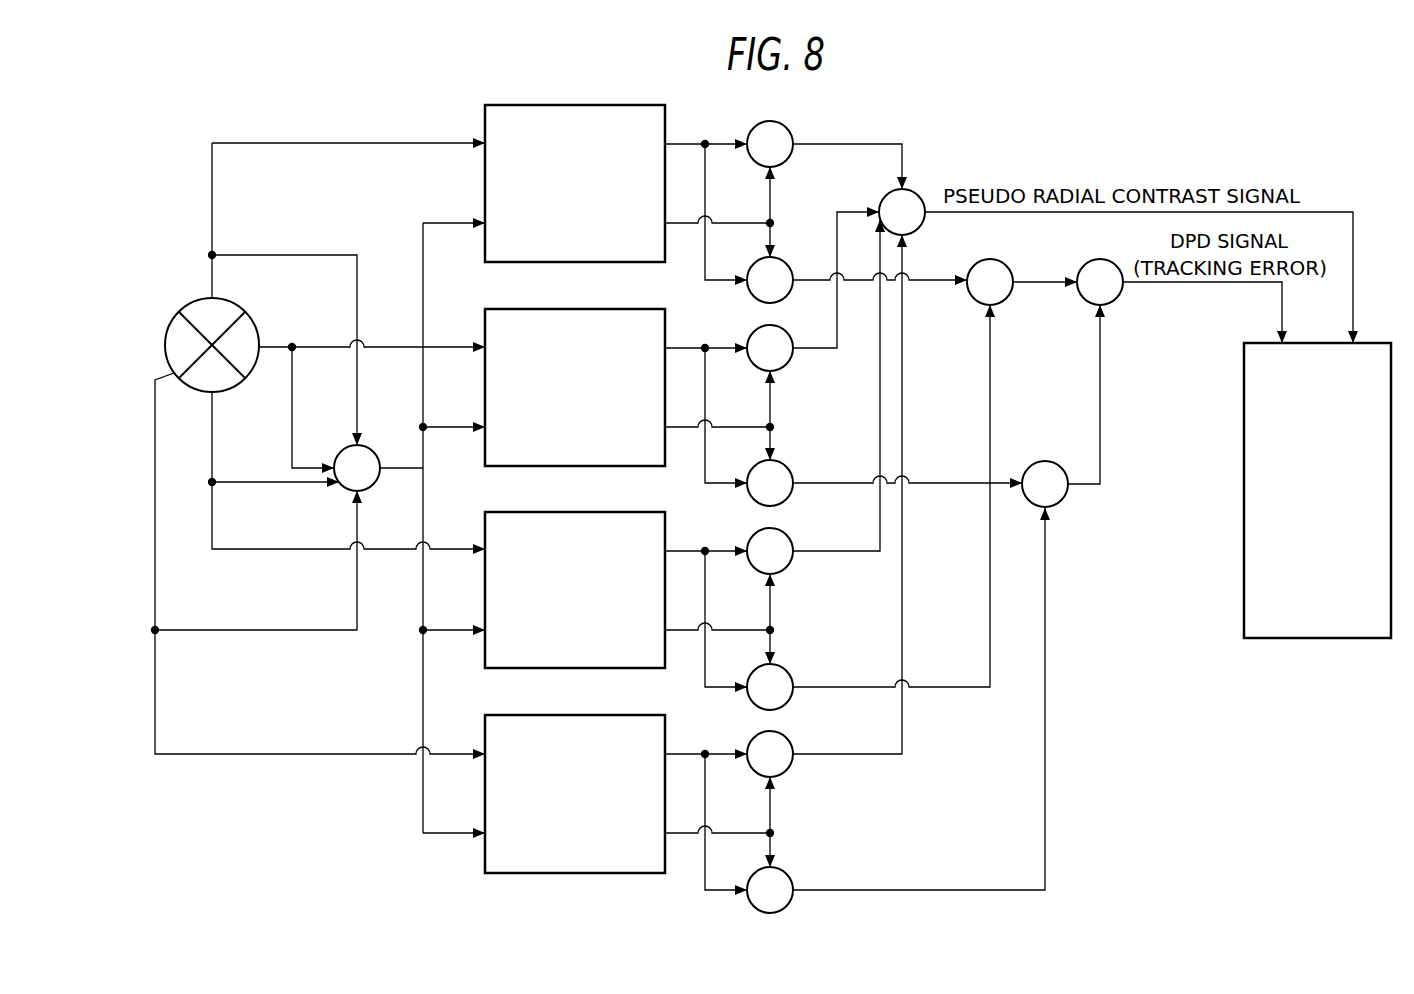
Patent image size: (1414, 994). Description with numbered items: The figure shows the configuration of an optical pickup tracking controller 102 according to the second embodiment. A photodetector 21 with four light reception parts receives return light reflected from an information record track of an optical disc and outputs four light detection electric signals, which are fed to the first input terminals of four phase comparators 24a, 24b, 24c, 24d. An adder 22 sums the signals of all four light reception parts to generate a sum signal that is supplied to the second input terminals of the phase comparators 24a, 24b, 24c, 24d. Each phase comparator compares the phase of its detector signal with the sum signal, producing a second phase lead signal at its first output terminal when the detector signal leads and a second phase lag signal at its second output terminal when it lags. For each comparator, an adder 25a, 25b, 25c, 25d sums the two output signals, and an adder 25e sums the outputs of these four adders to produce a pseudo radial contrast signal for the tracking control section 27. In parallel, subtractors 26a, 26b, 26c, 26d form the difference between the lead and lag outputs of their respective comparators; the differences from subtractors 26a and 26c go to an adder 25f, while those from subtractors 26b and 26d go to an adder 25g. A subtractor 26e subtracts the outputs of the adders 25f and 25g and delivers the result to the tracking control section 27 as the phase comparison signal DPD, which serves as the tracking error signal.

The optical pickup tracking controller 102 is at (277, 140).
The photodetector 21 is at (184, 307).
The adder 22 is at (373, 452).
The phase comparator 24a is at (580, 105).
The phase comparator 24b is at (580, 309).
The phase comparator 24c is at (580, 512).
The phase comparator 24d is at (580, 715).
The adder 25a is at (786, 163).
The adder 25b is at (786, 367).
The adder 25c is at (786, 570).
The adder 25d is at (786, 773).
The adder 25e is at (918, 230).
The adder 25f is at (1006, 300).
The adder 25g is at (1061, 502).
The subtractor 26a is at (786, 262).
The subtractor 26b is at (786, 465).
The subtractor 26c is at (786, 669).
The subtractor 26d is at (786, 872).
The subtractor 26e is at (1116, 300).
The tracking control section 27 is at (1244, 493).